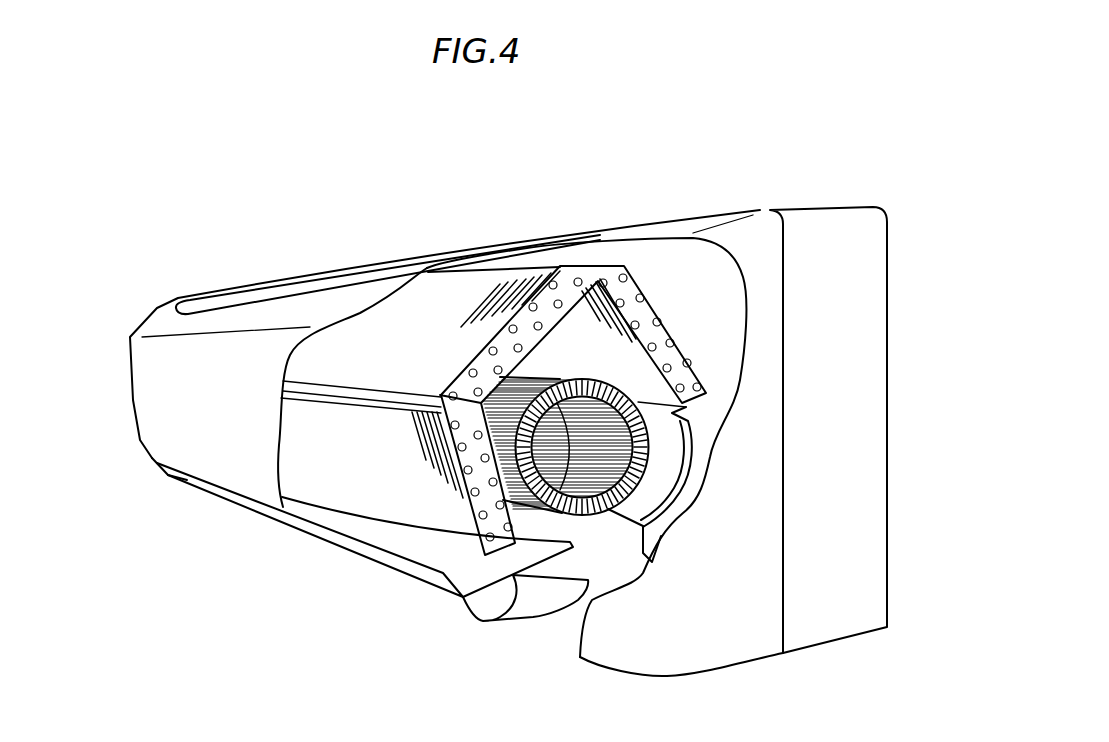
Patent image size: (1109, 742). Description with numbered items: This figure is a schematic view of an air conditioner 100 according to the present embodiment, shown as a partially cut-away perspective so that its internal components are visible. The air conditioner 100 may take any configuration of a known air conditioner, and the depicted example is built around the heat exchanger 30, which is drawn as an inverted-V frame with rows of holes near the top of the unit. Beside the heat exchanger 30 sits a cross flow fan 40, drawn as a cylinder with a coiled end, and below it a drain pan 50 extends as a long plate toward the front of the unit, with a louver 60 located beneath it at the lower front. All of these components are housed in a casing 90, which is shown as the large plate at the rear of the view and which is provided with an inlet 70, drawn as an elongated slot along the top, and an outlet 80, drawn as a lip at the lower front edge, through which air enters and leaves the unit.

The air conditioner 100 is at (821, 166).
The casing 90 is at (757, 393).
The inlet 70 is at (289, 285).
The heat exchanger 30 is at (461, 311).
The cross flow fan 40 is at (645, 464).
The drain pan 50 is at (400, 562).
The louver 60 is at (547, 593).
The outlet 80 is at (167, 474).